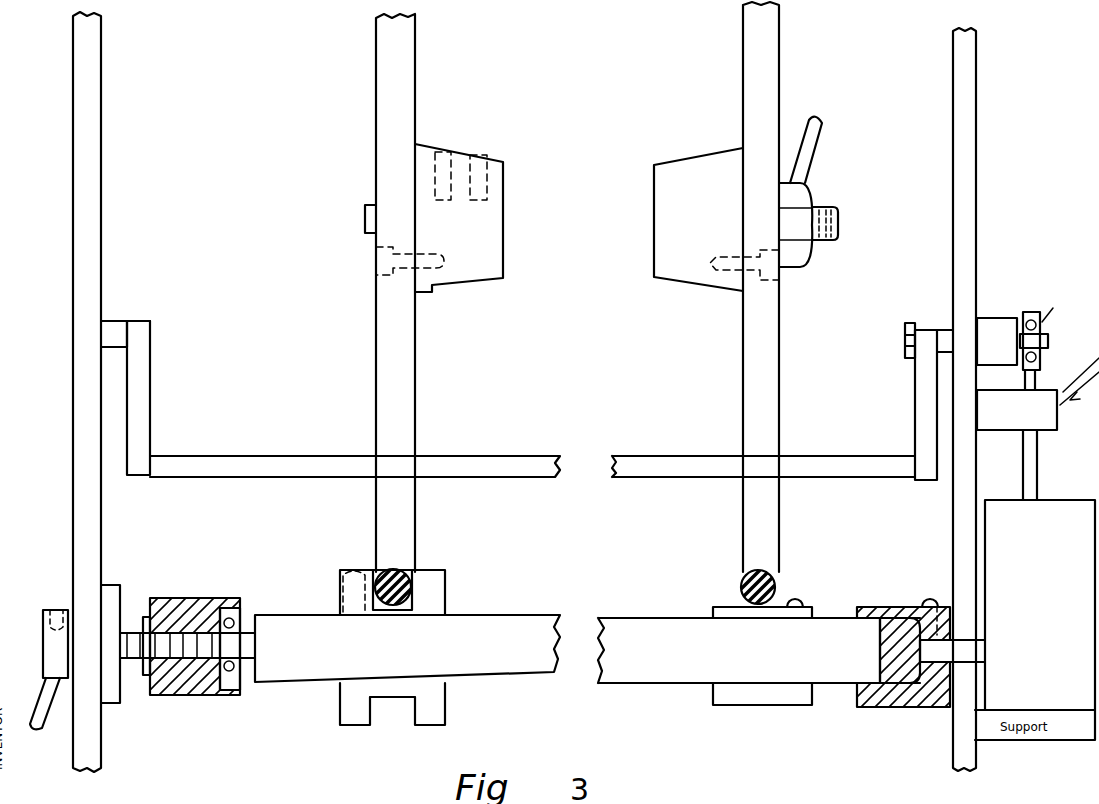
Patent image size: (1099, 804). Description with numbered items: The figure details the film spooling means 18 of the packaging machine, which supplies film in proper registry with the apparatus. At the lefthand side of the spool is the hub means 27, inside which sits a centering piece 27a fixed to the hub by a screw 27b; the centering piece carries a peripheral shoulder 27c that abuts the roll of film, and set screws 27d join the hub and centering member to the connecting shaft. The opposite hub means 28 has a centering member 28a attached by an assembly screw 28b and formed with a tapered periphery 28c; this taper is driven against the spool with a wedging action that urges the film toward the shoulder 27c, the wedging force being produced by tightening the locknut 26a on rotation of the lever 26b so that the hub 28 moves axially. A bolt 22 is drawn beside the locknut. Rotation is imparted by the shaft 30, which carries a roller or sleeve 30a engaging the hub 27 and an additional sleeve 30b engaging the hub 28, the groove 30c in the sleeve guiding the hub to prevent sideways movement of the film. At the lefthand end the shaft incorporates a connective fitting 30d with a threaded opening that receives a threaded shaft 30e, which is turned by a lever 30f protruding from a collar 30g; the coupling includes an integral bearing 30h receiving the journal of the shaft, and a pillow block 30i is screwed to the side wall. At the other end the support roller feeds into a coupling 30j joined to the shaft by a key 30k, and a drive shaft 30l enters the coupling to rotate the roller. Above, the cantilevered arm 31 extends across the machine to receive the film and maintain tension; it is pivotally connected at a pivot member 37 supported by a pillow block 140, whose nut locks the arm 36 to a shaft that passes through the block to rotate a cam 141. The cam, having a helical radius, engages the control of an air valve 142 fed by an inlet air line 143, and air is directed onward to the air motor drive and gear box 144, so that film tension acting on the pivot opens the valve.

The film spooling means 18 is at (271, 731).
The bolt 22 is at (840, 213).
The locknut 26a is at (812, 188).
The lever 26b is at (820, 128).
The hub means 27 is at (376, 71).
The centering piece 27a is at (484, 280).
The screw 27b is at (383, 265).
The peripheral shoulder 27c is at (437, 148).
The set screws 27d is at (478, 163).
The hub means 28 is at (744, 69).
The centering member 28a is at (709, 170).
The assembly screw 28b is at (783, 270).
The tapered periphery 28c is at (690, 284).
The shaft 30 is at (614, 690).
The roller or sleeve 30a is at (748, 700).
The sleeve 30b is at (438, 705).
The groove 30c is at (412, 715).
The connective fitting 30d is at (200, 606).
The threaded shaft 30e is at (135, 666).
The lever 30f is at (38, 730).
The collar 30g is at (60, 610).
The integral bearing 30h is at (240, 618).
The pillow block 30i is at (118, 618).
The coupling 30j is at (892, 702).
The key 30k is at (852, 615).
The drive shaft 30l is at (965, 660).
The cantilevered arm 31 is at (299, 468).
The arm 36 is at (143, 406).
The pivot member 37 is at (140, 338).
The pillow block 140 is at (998, 318).
The cam 141 is at (1042, 362).
The air valve 142 is at (1047, 432).
The inlet air line 143 is at (1060, 408).
The air motor drive and gear box 144 is at (1058, 691).